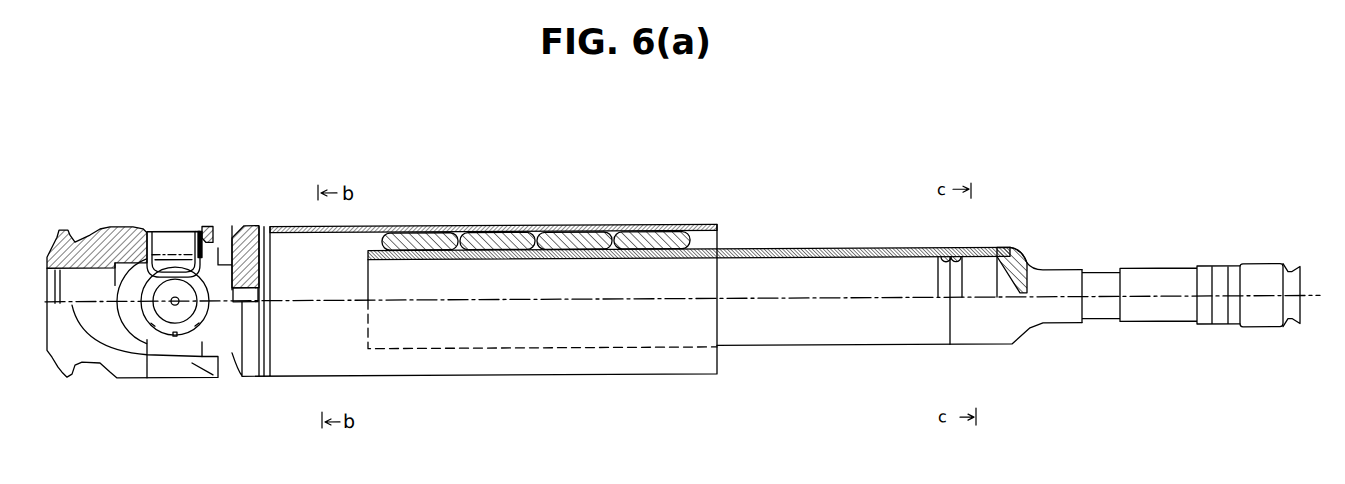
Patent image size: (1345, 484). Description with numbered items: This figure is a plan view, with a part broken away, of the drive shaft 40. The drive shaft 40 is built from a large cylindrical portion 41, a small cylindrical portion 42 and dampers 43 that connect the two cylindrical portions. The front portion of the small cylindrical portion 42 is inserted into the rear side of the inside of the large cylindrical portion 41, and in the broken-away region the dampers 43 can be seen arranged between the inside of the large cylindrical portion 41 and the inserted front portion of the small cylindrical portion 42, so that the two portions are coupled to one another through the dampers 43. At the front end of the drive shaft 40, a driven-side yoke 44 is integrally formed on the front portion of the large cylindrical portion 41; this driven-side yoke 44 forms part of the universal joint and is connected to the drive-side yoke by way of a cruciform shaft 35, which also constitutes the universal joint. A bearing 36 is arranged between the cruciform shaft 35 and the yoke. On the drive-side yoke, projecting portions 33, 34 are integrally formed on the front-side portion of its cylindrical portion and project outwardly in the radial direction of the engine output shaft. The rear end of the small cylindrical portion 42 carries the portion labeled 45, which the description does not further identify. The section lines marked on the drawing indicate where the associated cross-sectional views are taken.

The projecting portion 33 is at (84, 218).
The projecting portion 34 is at (120, 345).
The cruciform shaft 35 is at (175, 245).
The bearing 36 is at (213, 206).
The drive shaft 40 is at (682, 198).
The large cylindrical portion 41 is at (479, 259).
The small cylindrical portion 42 is at (804, 267).
The damper 43 is at (536, 195).
The driven-side yoke 44 is at (257, 265).
The spline portion 45 is at (1263, 264).